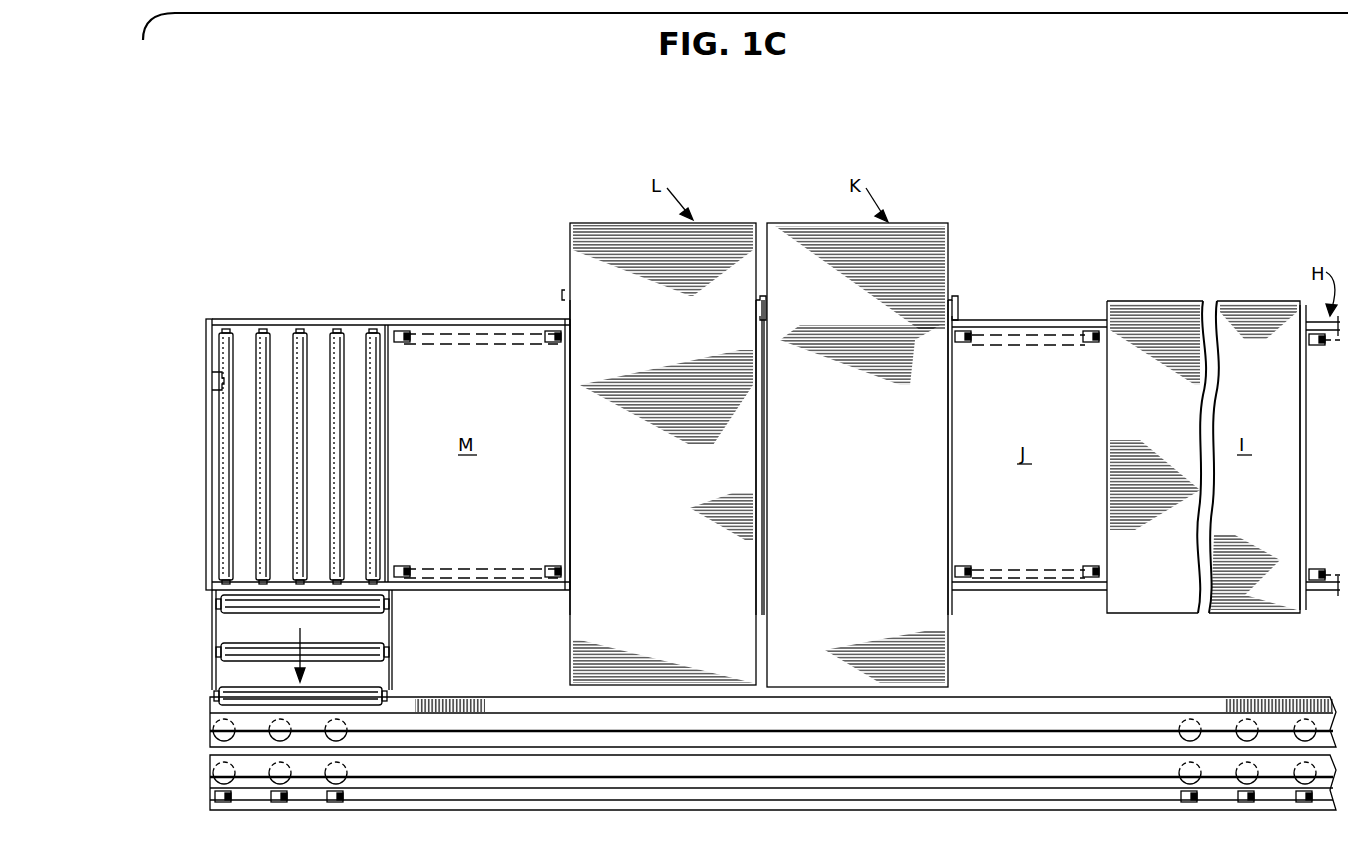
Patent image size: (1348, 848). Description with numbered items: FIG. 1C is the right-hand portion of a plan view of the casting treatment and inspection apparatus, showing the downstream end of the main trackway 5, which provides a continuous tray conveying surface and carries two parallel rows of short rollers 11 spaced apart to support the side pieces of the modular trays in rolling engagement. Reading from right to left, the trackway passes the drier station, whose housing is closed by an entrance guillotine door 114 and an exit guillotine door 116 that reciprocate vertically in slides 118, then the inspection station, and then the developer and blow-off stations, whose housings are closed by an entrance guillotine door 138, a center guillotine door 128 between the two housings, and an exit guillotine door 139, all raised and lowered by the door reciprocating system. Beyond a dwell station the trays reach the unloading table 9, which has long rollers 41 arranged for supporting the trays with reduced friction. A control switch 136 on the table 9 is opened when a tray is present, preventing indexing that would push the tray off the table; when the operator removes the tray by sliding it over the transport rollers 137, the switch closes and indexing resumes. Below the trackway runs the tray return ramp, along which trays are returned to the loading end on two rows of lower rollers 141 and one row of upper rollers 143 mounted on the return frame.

The main trackway 5 is at (1076, 593).
The unloading table 9 is at (203, 511).
The short rollers 11 is at (405, 344).
The long rollers 41 is at (224, 446).
The entrance guillotine door 114 is at (1307, 447).
The exit guillotine door 116 is at (1105, 488).
The slides 118 is at (564, 292).
The center guillotine door 128 is at (769, 468).
The control switch 136 is at (226, 379).
The transport rollers 137 is at (378, 650).
The entrance guillotine door 138 is at (954, 424).
The exit guillotine door 139 is at (567, 475).
The lower rollers 141 is at (208, 770).
The upper rollers 143 is at (207, 726).